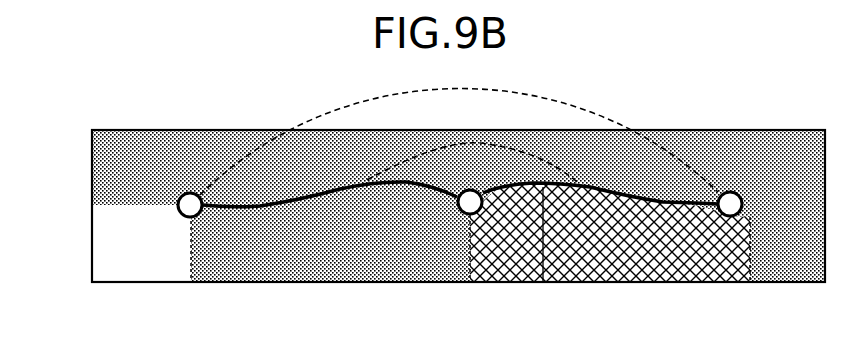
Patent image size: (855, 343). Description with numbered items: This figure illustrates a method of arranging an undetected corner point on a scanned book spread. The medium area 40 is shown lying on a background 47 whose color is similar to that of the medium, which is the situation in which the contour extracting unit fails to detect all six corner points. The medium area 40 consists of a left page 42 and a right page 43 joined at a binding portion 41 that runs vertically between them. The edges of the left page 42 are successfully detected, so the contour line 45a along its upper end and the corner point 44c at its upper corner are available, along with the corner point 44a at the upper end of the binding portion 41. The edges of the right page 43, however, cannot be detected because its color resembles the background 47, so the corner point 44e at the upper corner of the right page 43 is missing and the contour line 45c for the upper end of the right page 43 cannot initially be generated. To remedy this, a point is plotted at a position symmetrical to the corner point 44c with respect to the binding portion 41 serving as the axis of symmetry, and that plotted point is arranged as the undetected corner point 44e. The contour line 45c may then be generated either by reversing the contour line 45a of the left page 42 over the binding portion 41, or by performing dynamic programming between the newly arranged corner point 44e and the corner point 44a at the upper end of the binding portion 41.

The medium area 40 is at (209, 296).
The binding portion 41 is at (468, 257).
The left page 42 is at (326, 272).
The right page 43 is at (632, 283).
The corner point 44a is at (457, 206).
The corner point 44c is at (204, 208).
The corner point 44e is at (729, 217).
The contour line 45a is at (324, 195).
The contour line 45c is at (543, 283).
The background 47 is at (753, 143).